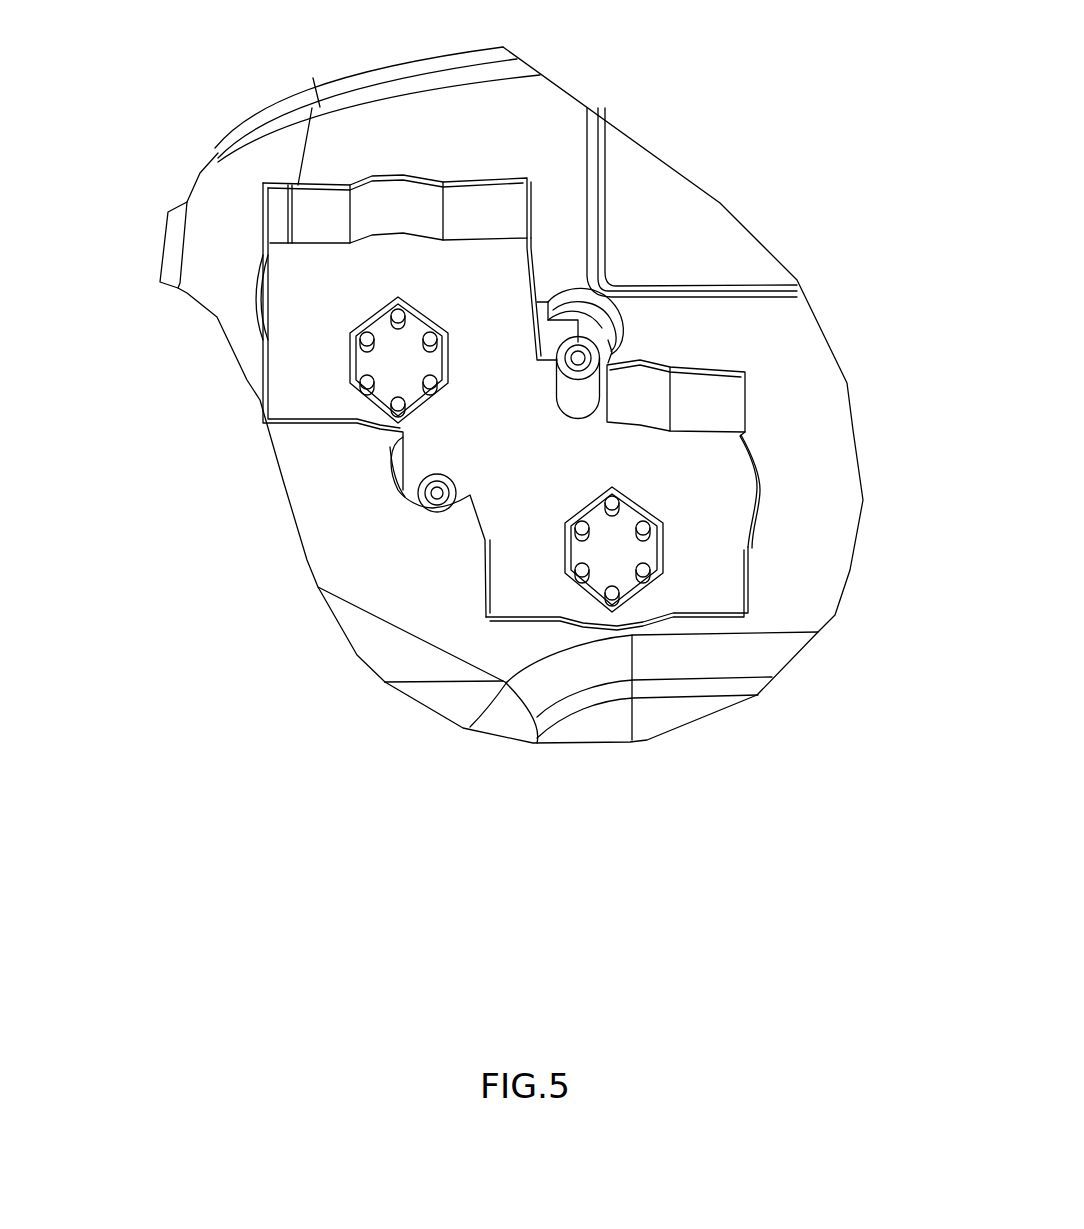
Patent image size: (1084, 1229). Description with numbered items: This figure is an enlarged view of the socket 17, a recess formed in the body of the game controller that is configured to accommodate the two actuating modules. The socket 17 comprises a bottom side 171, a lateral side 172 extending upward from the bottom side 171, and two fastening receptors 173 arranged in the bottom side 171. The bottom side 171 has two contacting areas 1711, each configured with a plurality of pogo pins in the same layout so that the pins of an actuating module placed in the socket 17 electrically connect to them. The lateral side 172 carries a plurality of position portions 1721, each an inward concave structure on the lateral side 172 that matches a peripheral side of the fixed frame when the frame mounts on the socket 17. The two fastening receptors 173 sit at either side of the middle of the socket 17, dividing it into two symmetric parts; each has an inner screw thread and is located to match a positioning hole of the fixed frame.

The socket 17 is at (300, 353).
The bottom side 171 is at (313, 403).
The lateral side 172 is at (303, 213).
The position portion 1721 is at (385, 193).
The contacting area 1711 is at (370, 410).
The fastening receptor 173 is at (413, 492).